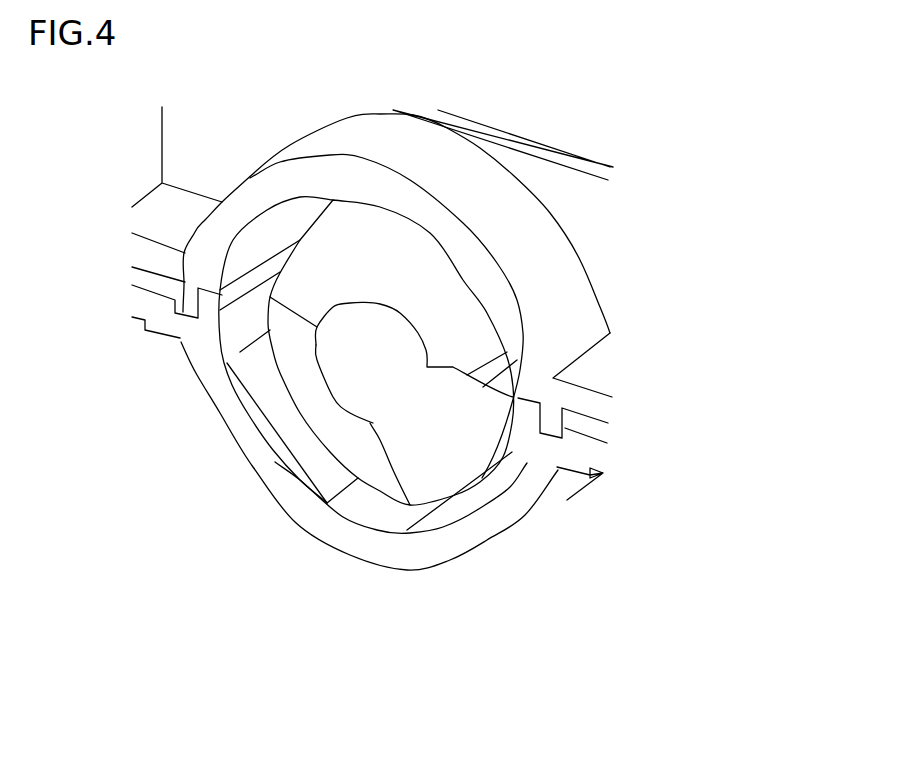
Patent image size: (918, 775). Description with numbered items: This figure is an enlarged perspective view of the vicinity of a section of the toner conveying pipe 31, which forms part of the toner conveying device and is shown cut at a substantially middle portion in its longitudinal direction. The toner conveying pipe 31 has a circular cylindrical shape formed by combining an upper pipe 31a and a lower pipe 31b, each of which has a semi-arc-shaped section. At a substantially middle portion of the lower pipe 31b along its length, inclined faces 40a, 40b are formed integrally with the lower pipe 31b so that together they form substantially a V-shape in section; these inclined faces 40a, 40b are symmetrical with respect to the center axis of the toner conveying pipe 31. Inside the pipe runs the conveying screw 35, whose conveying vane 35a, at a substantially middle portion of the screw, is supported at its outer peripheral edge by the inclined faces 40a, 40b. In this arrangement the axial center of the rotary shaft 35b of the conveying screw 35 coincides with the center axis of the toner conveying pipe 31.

The toner conveying pipe 31 is at (656, 416).
The upper pipe 31a is at (598, 363).
The lower pipe 31b is at (597, 457).
The conveying screw 35 is at (467, 350).
The conveying vane 35a is at (517, 357).
The rotary shaft 35b is at (375, 350).
The inclined face 40a is at (283, 421).
The inclined face 40b is at (462, 500).